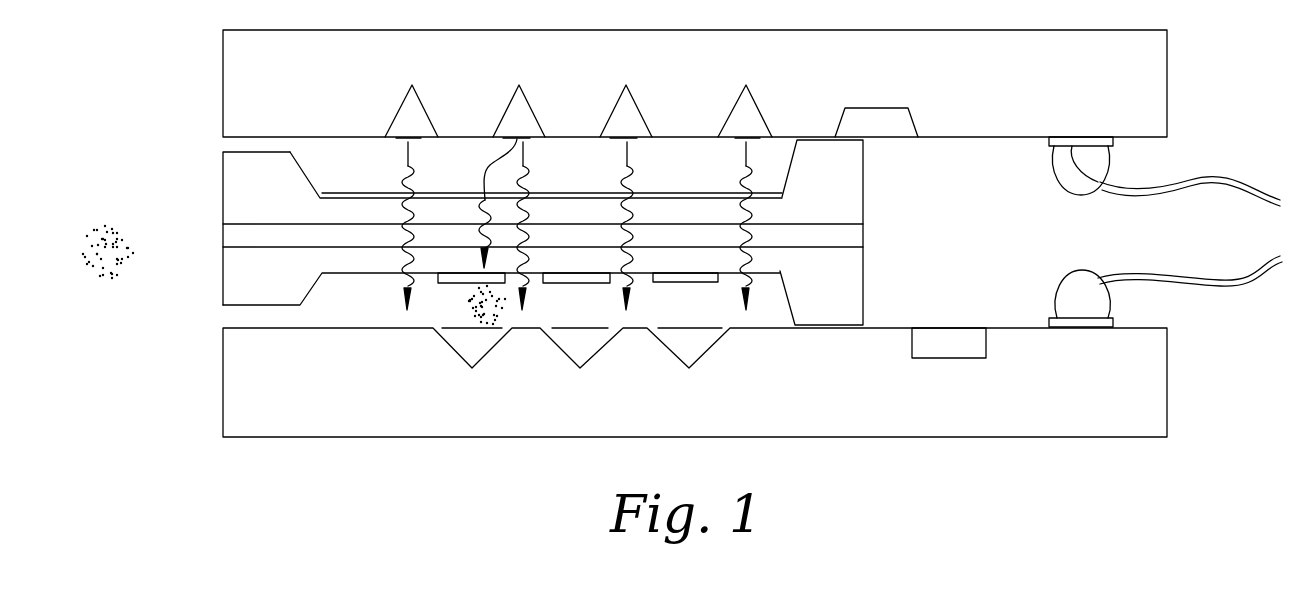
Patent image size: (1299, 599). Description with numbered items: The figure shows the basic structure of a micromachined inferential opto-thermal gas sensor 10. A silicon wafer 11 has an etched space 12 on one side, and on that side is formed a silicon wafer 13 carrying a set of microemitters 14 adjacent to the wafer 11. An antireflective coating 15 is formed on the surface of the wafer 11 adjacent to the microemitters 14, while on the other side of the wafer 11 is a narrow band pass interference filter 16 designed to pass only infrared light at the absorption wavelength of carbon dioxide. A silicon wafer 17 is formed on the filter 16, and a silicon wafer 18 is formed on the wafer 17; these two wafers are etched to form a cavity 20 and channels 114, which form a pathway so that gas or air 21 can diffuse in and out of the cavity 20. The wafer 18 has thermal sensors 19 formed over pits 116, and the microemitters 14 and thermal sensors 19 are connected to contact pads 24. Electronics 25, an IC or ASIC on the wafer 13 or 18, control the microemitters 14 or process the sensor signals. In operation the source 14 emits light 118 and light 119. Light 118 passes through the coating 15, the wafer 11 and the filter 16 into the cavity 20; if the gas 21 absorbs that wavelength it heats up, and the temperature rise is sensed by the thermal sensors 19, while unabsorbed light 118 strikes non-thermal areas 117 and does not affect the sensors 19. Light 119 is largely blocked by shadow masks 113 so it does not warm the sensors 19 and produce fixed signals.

The inferential opto-thermal gas sensor 10 is at (158, 163).
The silicon wafer 11 is at (808, 208).
The etched space 12 is at (336, 176).
The silicon wafer 13 is at (1019, 98).
The microemitters 14 is at (621, 142).
The antireflective coating 15 is at (526, 190).
The narrow band pass interference filter 16 is at (233, 234).
The silicon wafer 17 is at (238, 290).
The silicon wafer 18 is at (236, 398).
The thermal sensors 19 is at (572, 330).
The cavity 20 is at (331, 316).
The gas or air 21 is at (90, 280).
The contact pads 24 is at (1080, 158).
The electronics 25 is at (892, 155).
The shadow masks 113 is at (462, 284).
The channels 114 is at (213, 325).
The pits 116 is at (708, 349).
The non-thermal areas 117 is at (633, 331).
The light 118 is at (404, 292).
The light 119 is at (478, 174).